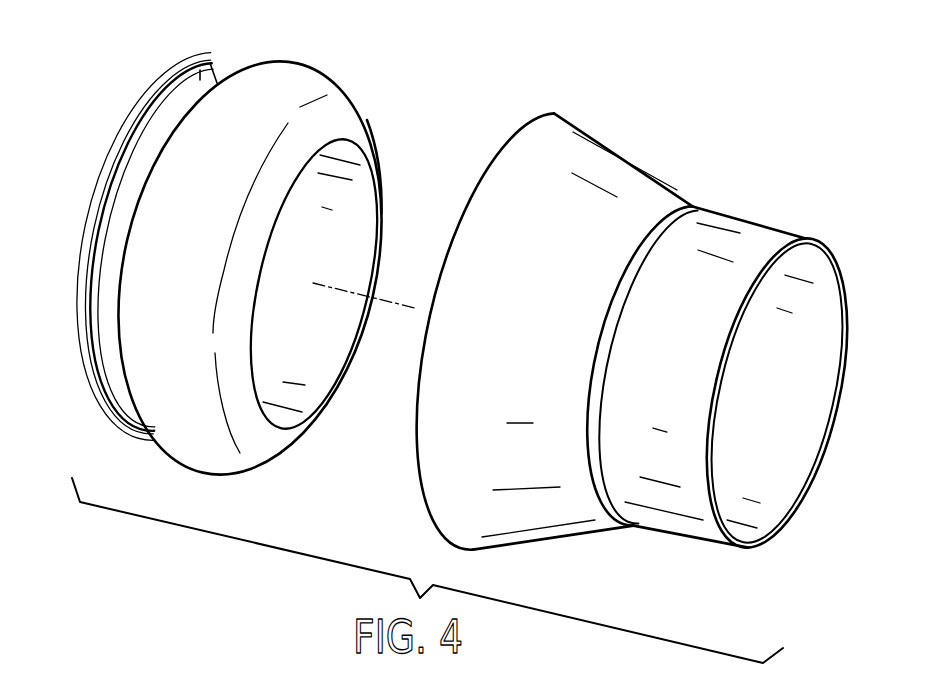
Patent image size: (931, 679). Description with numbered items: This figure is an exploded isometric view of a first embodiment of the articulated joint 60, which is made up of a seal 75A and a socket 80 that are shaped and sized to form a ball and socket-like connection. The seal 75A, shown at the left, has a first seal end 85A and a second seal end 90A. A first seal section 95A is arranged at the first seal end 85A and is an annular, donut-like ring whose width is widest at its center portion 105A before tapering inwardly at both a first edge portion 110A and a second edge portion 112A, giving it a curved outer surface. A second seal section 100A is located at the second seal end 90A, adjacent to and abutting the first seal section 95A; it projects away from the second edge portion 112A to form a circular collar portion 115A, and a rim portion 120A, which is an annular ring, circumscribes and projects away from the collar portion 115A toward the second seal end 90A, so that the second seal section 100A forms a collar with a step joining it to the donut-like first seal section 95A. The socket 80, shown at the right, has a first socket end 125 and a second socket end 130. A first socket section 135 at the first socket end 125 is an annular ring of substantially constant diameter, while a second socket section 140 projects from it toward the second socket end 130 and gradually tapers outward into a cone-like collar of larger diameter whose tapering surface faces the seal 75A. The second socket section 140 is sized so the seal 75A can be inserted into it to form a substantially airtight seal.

The articulated joint 60 is at (790, 93).
The seal 75A is at (257, 477).
The socket 80 is at (817, 490).
The first seal end 85A is at (382, 210).
The second seal end 90A is at (88, 232).
The first seal section 95A is at (292, 460).
The second seal section 100A is at (117, 438).
The center portion 105A is at (312, 72).
The first edge portion 110A is at (375, 135).
The second edge portion 112A is at (217, 57).
The collar portion 115A is at (205, 57).
The rim portion 120A is at (163, 76).
The first socket end 125 is at (843, 253).
The second socket end 130 is at (507, 143).
The first socket section 135 is at (690, 533).
The second socket section 140 is at (645, 167).